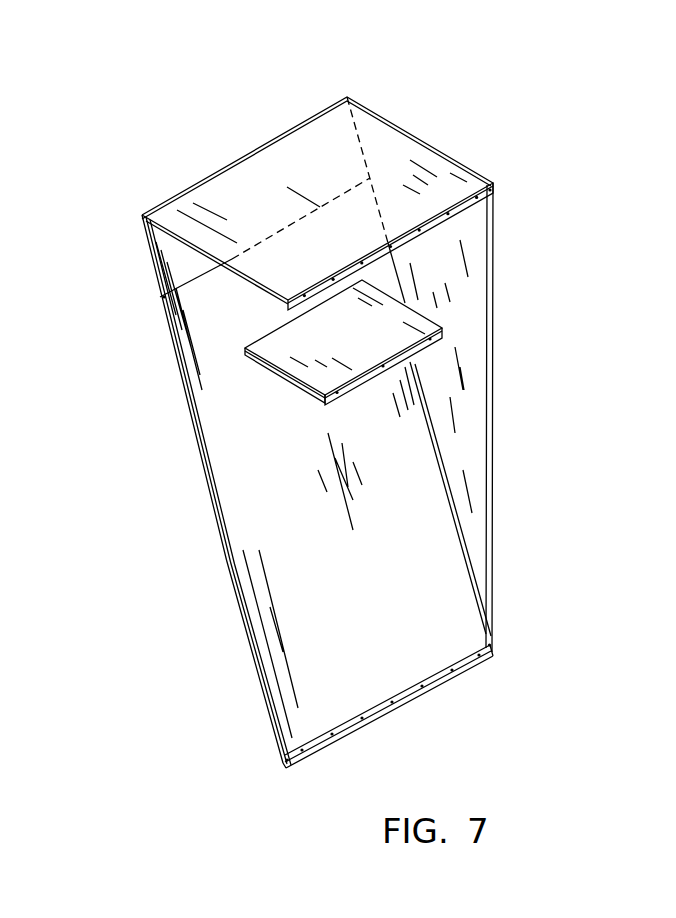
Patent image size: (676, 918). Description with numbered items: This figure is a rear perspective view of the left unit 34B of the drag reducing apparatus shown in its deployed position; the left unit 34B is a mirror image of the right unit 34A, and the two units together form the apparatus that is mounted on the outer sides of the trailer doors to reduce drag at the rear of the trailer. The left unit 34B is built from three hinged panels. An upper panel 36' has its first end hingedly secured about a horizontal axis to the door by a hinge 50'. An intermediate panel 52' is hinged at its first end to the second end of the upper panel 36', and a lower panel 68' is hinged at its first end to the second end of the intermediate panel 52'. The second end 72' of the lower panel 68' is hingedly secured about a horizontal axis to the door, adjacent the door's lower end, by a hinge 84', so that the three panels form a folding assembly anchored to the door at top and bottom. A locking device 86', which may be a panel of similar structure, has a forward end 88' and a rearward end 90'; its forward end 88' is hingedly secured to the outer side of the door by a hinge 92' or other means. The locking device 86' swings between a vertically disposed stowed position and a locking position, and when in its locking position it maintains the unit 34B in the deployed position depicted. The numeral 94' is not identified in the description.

The right unit 34A is at (497, 163).
The left unit 34B is at (193, 467).
The upper panel 36' is at (326, 350).
The hinge 50' is at (440, 246).
The intermediate panel 52' is at (137, 274).
The lower panel 68' is at (204, 656).
The second end of lower panel 72' is at (342, 703).
The hinge 84' is at (388, 706).
The locking device 86' is at (276, 377).
The forward end of locking device 88' is at (418, 337).
The rearward end of locking device 90' is at (207, 362).
The hinge 92' is at (251, 461).
The back wall 94' is at (459, 417).